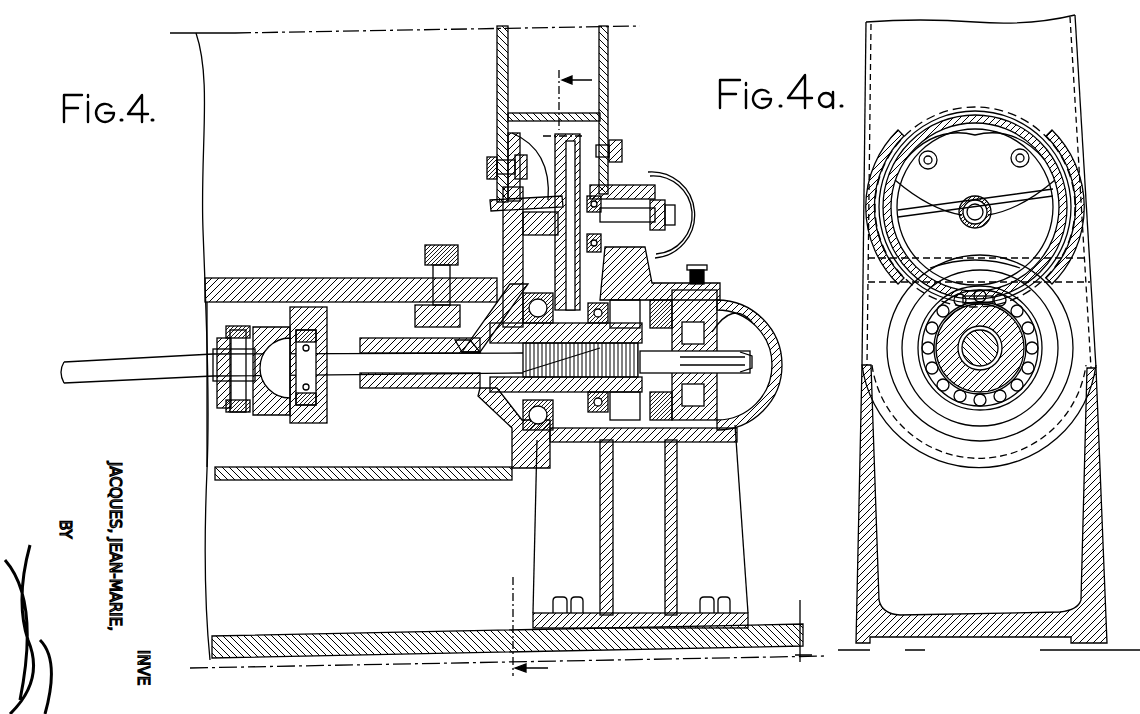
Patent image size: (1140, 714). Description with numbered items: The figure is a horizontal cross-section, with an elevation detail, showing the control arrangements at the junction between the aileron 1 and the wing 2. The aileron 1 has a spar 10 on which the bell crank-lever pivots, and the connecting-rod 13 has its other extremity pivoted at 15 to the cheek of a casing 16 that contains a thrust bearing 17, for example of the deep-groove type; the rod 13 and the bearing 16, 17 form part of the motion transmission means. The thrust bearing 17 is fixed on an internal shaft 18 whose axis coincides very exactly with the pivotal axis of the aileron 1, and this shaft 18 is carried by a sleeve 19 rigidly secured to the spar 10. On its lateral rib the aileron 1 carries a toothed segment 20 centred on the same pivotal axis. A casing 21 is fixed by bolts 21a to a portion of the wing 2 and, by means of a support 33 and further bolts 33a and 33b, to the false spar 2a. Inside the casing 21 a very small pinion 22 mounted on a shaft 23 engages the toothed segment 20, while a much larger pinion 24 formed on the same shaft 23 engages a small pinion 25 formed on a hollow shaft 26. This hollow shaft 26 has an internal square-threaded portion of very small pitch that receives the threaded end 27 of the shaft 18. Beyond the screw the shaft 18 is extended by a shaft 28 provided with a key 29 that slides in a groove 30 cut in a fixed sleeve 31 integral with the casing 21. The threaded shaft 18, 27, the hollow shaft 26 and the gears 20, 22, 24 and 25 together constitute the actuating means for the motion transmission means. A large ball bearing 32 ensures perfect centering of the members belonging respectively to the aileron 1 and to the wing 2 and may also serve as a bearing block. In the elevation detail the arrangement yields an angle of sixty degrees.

In FIG. 4, the aileron 1 is at (497, 68).
In FIG. 4A, the aileron 1 is at (1066, 96).
In FIG. 4, the wing 2 is at (609, 76).
In FIG. 4, the false spar 2a is at (330, 638).
In FIG. 4, the spar 10 is at (385, 278).
In FIG. 4A, the spar 10 is at (880, 290).
In FIG. 4, the connecting-rod 13 is at (132, 366).
In FIG. 4, the pivot 15 is at (215, 402).
In FIG. 4, the casing 16 is at (285, 413).
In FIG. 4, the thrust bearing 17 is at (316, 332).
In FIG. 4, the internal shaft 18 is at (376, 386).
In FIG. 4, the sleeve 19 is at (432, 392).
In FIG. 4, the toothed segment 20 is at (500, 196).
In FIG. 4A, the toothed segment 20 is at (1035, 200).
In FIG. 4, the casing 21 is at (690, 290).
In FIG. 4, the bolts 21a is at (622, 148).
In FIG. 4, the small pinion 22 is at (505, 222).
In FIG. 4A, the small pinion 22 is at (986, 216).
In FIG. 4, the shaft 23 is at (630, 215).
In FIG. 4, the large pinion 24 is at (580, 134).
In FIG. 4A, the large pinion 24 is at (882, 240).
In FIG. 4, the small pinion 25 is at (590, 414).
In FIG. 4A, the small pinion 25 is at (1015, 347).
In FIG. 4, the hollow shaft 26 is at (632, 425).
In FIG. 4, the threaded end 27 is at (492, 392).
In FIG. 4A, the threaded end 27 is at (986, 355).
In FIG. 4, the shaft 28 is at (705, 388).
In FIG. 4, the key 29 is at (668, 361).
In FIG. 4, the groove 30 is at (750, 342).
In FIG. 4, the fixed sleeve 31 is at (740, 322).
In FIG. 4, the large ball bearing 32 is at (527, 418).
In FIG. 4A, the large ball bearing 32 is at (930, 384).
In FIG. 4, the support 33 is at (725, 495).
In FIG. 4, the bolt 33a is at (565, 598).
In FIG. 4, the bolt 33b is at (716, 598).